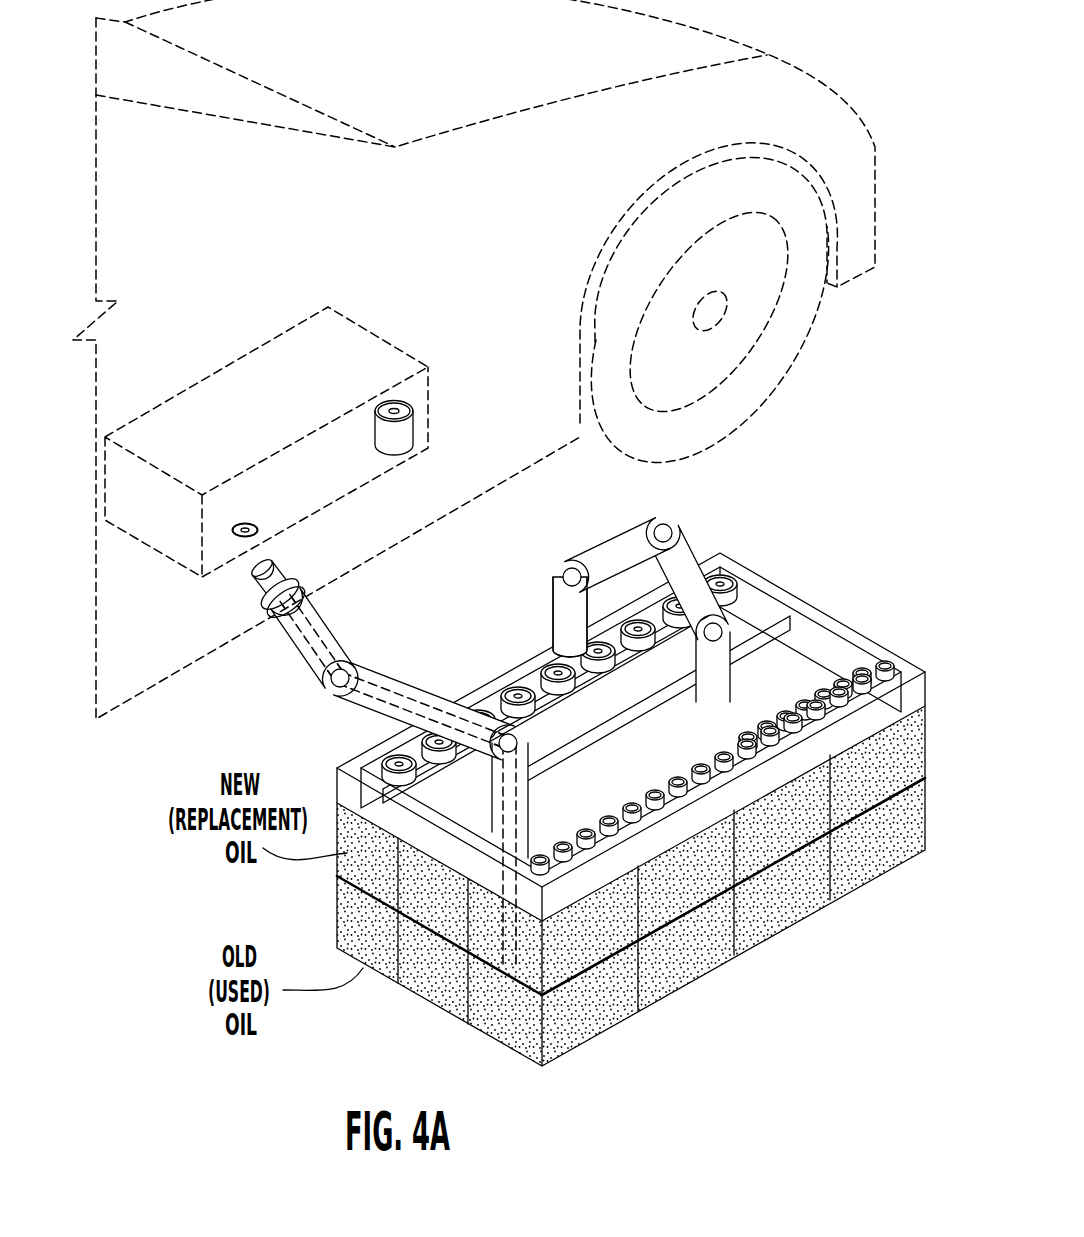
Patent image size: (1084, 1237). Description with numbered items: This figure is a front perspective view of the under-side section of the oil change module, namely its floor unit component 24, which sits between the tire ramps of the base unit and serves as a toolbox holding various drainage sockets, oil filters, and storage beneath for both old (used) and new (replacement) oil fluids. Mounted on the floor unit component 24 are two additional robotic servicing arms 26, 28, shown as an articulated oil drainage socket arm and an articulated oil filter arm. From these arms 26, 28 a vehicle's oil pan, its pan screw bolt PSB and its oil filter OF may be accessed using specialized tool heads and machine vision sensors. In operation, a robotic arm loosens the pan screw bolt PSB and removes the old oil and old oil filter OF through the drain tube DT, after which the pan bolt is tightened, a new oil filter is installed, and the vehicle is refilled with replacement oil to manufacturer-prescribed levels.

The floor unit component 24 is at (825, 590).
The robotic servicing arm 26 is at (611, 543).
The robotic servicing arm 28 is at (322, 620).
The oil filter OF is at (402, 437).
The pan screw bolt PSB is at (240, 540).
The drain tube DT is at (393, 694).